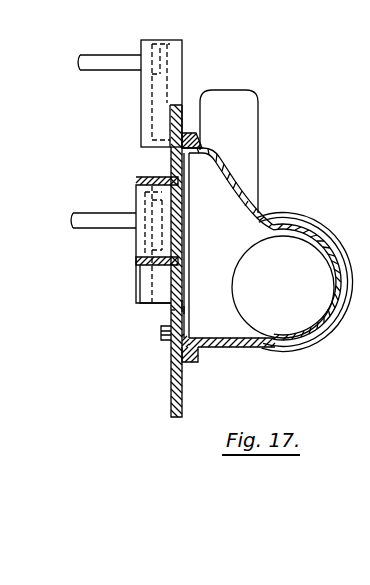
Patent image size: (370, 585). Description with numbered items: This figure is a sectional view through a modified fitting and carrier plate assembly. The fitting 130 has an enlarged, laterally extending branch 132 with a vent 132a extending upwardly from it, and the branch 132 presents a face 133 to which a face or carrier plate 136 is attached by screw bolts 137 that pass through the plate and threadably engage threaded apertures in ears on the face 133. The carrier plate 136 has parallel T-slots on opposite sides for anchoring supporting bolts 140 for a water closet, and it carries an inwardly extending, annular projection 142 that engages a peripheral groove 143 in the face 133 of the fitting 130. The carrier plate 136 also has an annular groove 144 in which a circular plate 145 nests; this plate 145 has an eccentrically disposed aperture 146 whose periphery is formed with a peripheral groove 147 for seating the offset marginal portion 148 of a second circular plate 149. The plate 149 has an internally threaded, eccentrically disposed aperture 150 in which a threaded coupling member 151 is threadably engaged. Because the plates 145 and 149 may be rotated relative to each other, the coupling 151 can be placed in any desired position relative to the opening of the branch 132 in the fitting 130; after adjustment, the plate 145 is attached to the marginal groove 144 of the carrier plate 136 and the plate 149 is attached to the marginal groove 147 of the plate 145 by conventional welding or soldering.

The fitting 130 is at (267, 202).
The branch 132 is at (233, 170).
The vent 132a is at (257, 118).
The face 133 is at (172, 362).
The carrier plate 136 is at (178, 102).
The screw bolts 137 is at (166, 337).
The supporting bolts 140 is at (110, 71).
The annular projection 142 is at (194, 147).
The peripheral groove 143 is at (200, 353).
The annular groove 144 is at (187, 330).
The circular plate 145 is at (189, 310).
The eccentrically disposed aperture 146 is at (185, 306).
The peripheral groove 147 is at (168, 312).
The offset marginal portion 148 is at (171, 306).
The circular plate 149 is at (186, 283).
The threaded aperture 150 is at (170, 182).
The threaded coupling member 151 is at (135, 265).